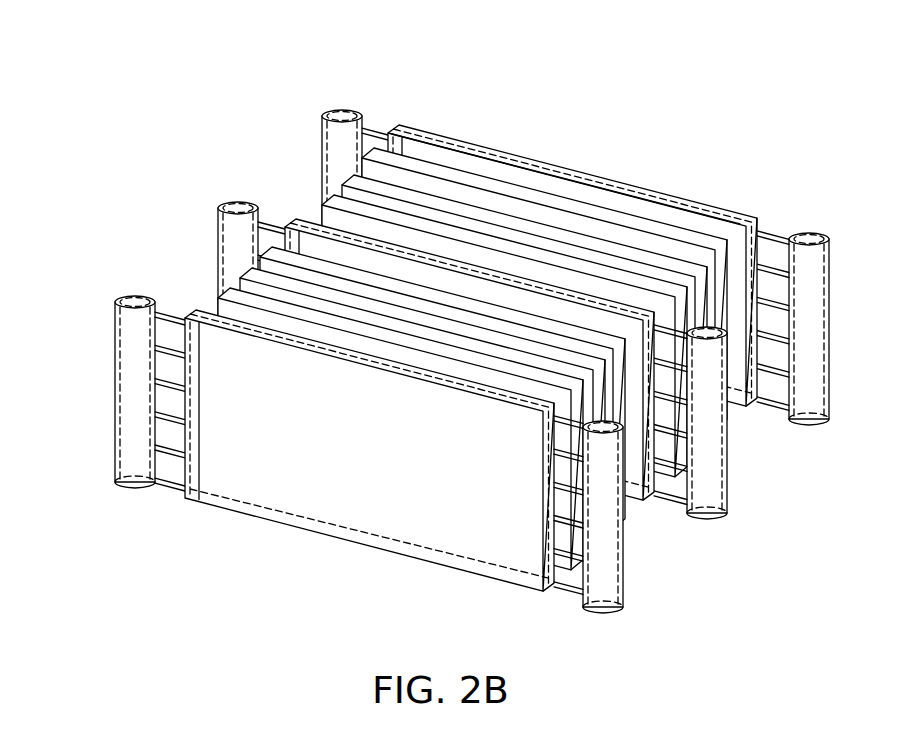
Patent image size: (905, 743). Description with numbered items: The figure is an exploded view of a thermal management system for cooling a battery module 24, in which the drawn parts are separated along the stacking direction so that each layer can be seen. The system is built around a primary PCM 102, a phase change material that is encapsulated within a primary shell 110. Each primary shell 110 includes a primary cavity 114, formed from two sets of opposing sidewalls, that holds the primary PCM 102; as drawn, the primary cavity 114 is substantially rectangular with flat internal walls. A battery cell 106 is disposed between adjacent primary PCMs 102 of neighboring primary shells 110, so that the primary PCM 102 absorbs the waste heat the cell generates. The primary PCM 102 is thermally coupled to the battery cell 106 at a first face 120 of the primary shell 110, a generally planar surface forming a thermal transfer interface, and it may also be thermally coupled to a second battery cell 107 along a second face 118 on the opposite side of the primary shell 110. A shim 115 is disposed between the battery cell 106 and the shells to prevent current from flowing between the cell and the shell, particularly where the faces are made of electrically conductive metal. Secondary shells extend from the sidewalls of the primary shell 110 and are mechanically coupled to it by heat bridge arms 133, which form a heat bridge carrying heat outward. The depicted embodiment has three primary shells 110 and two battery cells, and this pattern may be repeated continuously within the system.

The battery module 24 is at (136, 140).
The primary PCM 102 is at (237, 488).
The battery cell 106 is at (360, 178).
The second battery cell 107 is at (243, 272).
The primary shell 110 is at (417, 152).
The primary cavity 114 is at (591, 163).
The shim 115 is at (458, 190).
The second face 118 is at (302, 244).
The first face 120 is at (305, 213).
The heat bridge arm 133 is at (560, 594).